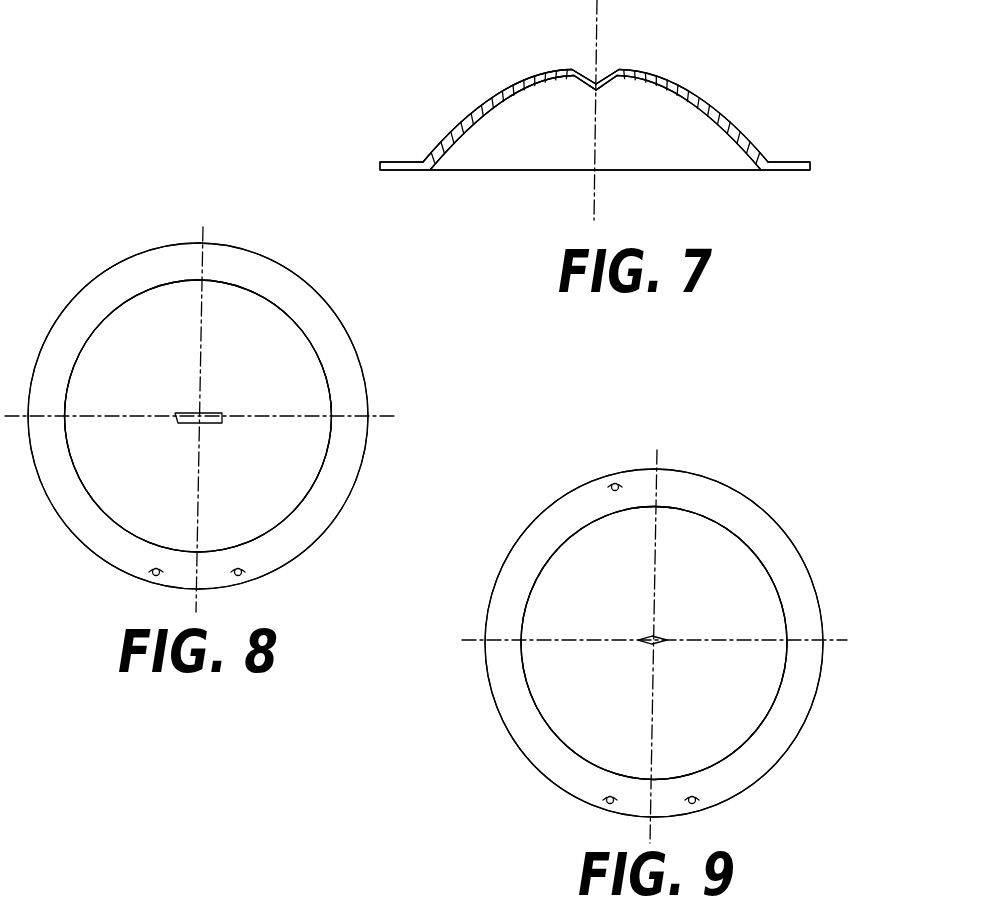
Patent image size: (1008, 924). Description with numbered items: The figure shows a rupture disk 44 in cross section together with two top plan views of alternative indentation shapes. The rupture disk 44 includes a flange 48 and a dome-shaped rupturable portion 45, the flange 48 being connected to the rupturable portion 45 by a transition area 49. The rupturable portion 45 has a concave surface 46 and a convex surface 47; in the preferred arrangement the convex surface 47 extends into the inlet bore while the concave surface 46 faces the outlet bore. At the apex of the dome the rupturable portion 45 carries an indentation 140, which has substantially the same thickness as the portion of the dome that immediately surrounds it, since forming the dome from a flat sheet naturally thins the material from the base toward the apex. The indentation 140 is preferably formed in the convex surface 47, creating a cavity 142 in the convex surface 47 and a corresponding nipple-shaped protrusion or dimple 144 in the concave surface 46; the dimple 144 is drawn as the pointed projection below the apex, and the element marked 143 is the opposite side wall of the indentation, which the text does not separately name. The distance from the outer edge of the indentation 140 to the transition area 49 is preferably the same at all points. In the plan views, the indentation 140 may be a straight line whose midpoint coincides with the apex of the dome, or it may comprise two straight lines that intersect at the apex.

In FIG. 7, the rupture disk 44 is at (384, 134).
In FIG. 8, the rupture disk 44 is at (86, 264).
In FIG. 9, the rupture disk 44 is at (544, 490).
In FIG. 7, the rupturable portion 45 is at (725, 113).
In FIG. 8, the rupturable portion 45 is at (147, 366).
In FIG. 9, the rupturable portion 45 is at (604, 591).
In FIG. 7, the concave surface 46 is at (492, 104).
In FIG. 7, the convex surface 47 is at (504, 84).
In FIG. 7, the flange 48 is at (805, 162).
In FIG. 8, the flange 48 is at (325, 315).
In FIG. 9, the flange 48 is at (780, 540).
In FIG. 7, the transition area 49 is at (760, 172).
In FIG. 7, the indentation 140 is at (597, 69).
In FIG. 8, the indentation 140 is at (207, 412).
In FIG. 9, the indentation 140 is at (663, 636).
In FIG. 7, the cavity 142 is at (621, 70).
In FIG. 7, the left side wall of dimple 143 is at (588, 68).
In FIG. 7, the nipple-shaped protrusion/dimple 144 is at (601, 89).